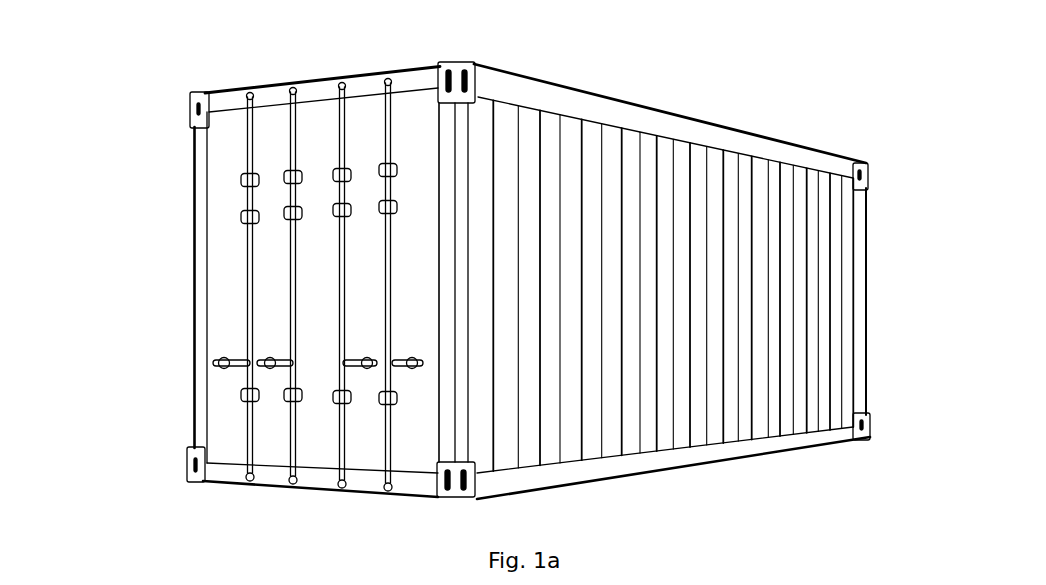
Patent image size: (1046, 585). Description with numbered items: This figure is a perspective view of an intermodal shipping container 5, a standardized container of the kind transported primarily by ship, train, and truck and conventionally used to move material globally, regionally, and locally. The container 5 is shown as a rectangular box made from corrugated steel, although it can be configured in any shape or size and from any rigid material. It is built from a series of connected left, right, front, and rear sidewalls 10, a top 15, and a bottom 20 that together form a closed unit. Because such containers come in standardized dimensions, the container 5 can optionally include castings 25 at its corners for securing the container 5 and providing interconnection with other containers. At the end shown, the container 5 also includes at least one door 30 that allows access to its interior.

The intermodal shipping container 5 is at (116, 103).
The sidewalls 10 is at (682, 168).
The top 15 is at (566, 88).
The bottom 20 is at (730, 457).
The castings 25 is at (205, 93).
The door 30 is at (225, 296).